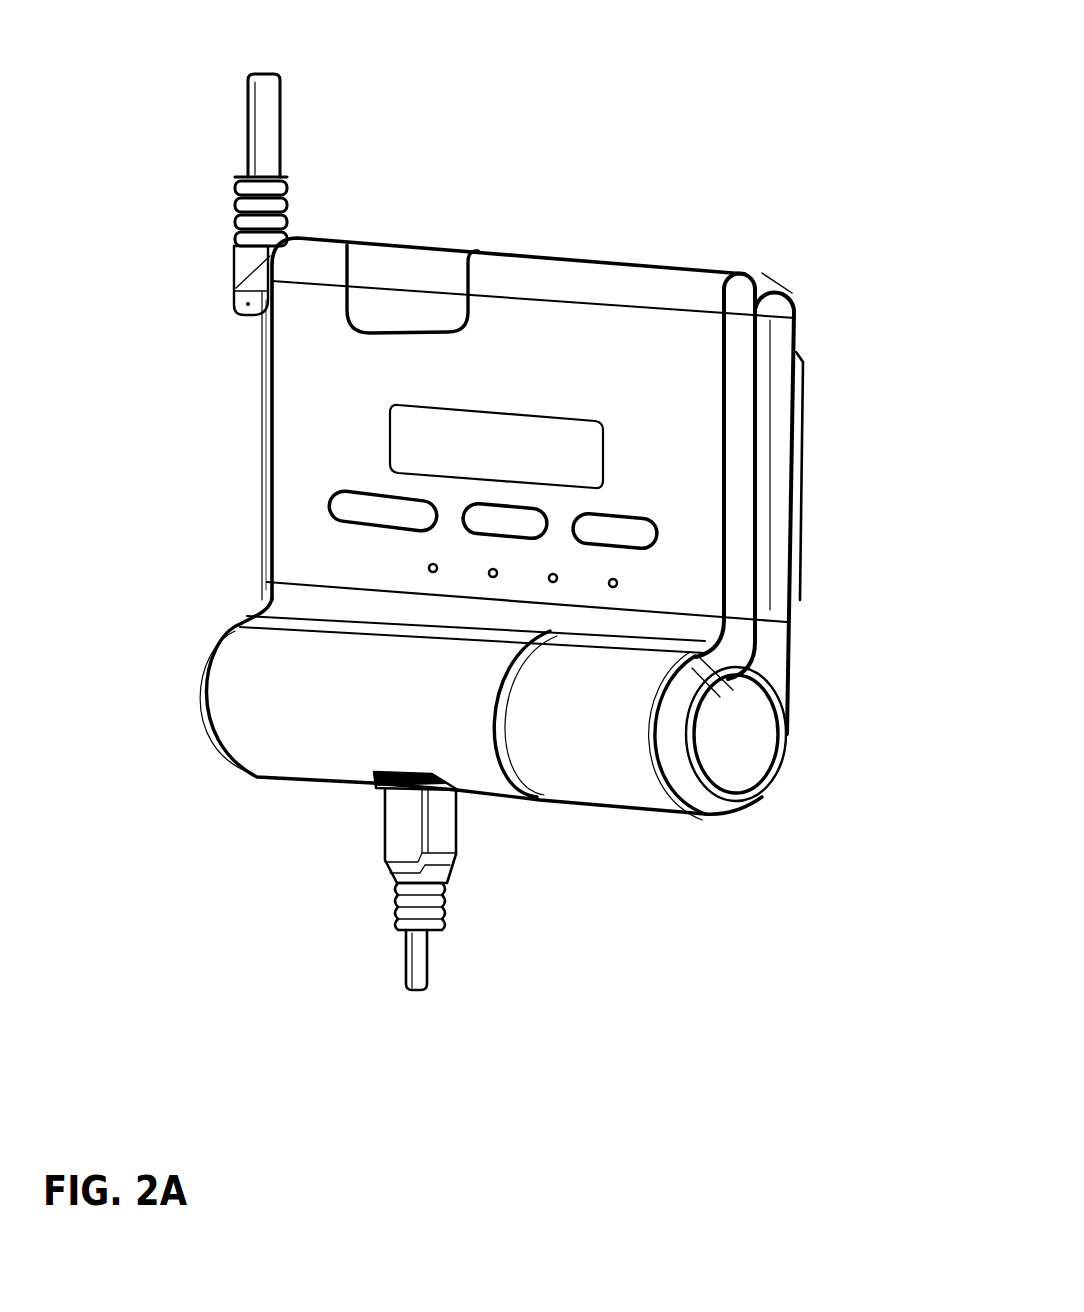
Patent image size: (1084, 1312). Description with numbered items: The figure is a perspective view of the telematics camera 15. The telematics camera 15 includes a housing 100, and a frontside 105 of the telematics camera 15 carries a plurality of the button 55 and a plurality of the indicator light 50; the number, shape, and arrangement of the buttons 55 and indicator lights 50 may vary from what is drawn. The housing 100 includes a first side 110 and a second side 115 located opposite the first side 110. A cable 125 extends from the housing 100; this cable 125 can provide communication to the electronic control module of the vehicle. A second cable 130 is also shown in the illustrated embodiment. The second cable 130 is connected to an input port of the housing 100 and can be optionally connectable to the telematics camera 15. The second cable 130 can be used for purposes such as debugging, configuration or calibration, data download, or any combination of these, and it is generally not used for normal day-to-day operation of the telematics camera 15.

The telematics camera 15 is at (668, 97).
The housing 100 is at (635, 263).
The first side 110 is at (782, 345).
The second side 115 is at (263, 377).
The frontside 105 is at (313, 433).
The button 55 is at (350, 505).
The indicator light 50 is at (662, 583).
The cable 125 is at (242, 133).
The second cable 130 is at (428, 958).